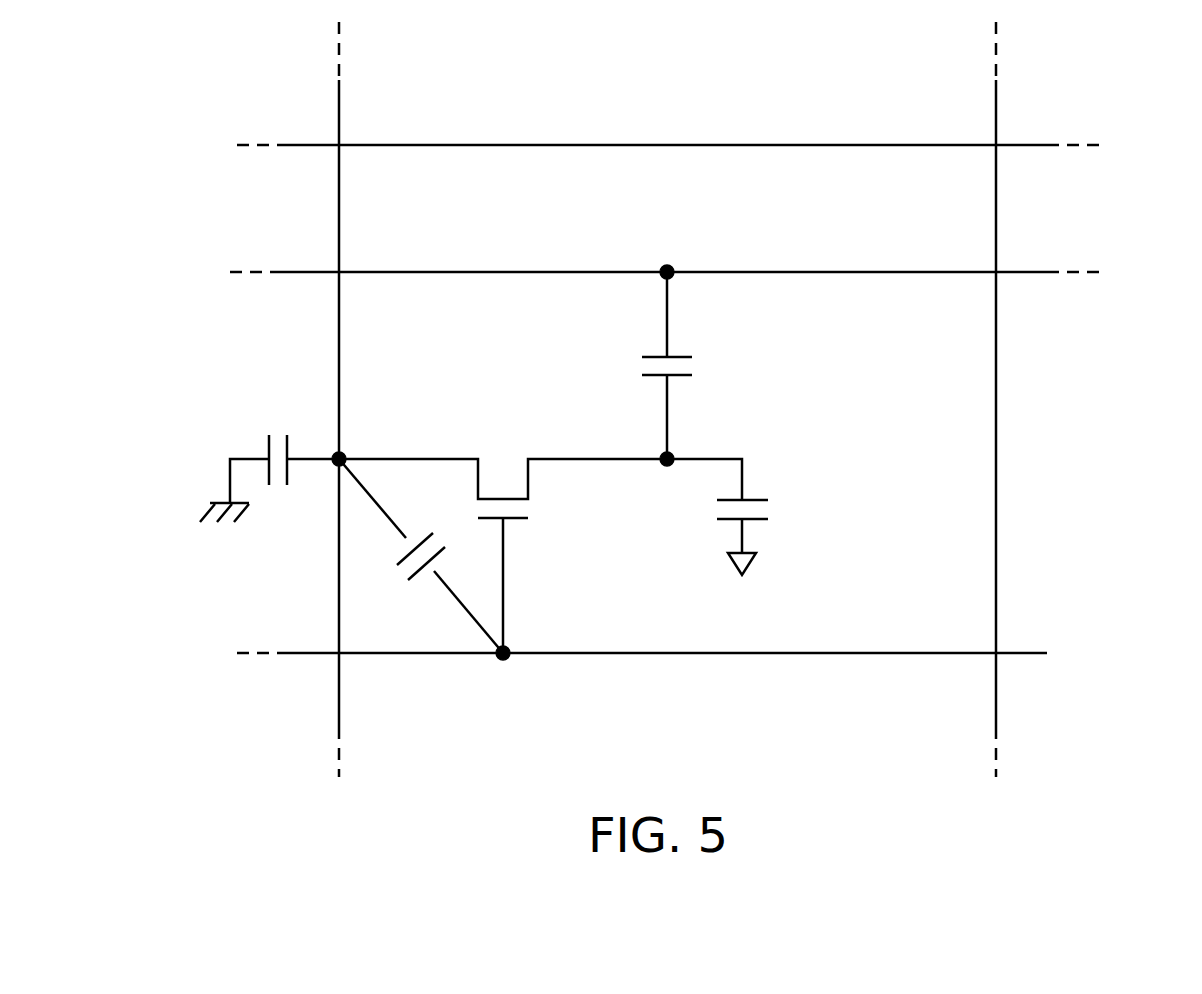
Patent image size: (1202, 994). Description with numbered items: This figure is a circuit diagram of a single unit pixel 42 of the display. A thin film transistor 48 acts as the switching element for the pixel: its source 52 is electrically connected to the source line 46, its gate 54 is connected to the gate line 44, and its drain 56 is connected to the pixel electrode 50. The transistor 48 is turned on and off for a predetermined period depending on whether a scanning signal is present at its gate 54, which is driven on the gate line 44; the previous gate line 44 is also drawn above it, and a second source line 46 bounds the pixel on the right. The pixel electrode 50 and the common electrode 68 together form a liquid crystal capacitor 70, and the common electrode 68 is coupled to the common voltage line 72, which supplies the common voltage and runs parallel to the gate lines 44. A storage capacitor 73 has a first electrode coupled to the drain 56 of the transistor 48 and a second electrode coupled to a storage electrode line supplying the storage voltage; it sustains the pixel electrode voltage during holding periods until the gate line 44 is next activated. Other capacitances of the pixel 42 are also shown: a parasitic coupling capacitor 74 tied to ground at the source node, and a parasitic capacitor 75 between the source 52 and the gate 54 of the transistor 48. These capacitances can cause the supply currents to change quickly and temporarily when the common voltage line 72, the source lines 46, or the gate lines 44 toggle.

The unit pixel 42 is at (563, 118).
The gate line 44 is at (303, 147).
The source line 46 is at (340, 702).
The thin film transistor 48 is at (497, 459).
The pixel electrode 50 is at (652, 362).
The source 52 is at (334, 455).
The gate 54 is at (507, 660).
The drain 56 is at (672, 455).
The common electrode 68 is at (680, 356).
The liquid crystal capacitor 70 is at (630, 364).
The common voltage line 72 is at (1027, 274).
The storage capacitor 73 is at (770, 510).
The parasitic coupling capacitor 74 is at (273, 428).
The parasitic capacitor 75 is at (398, 577).